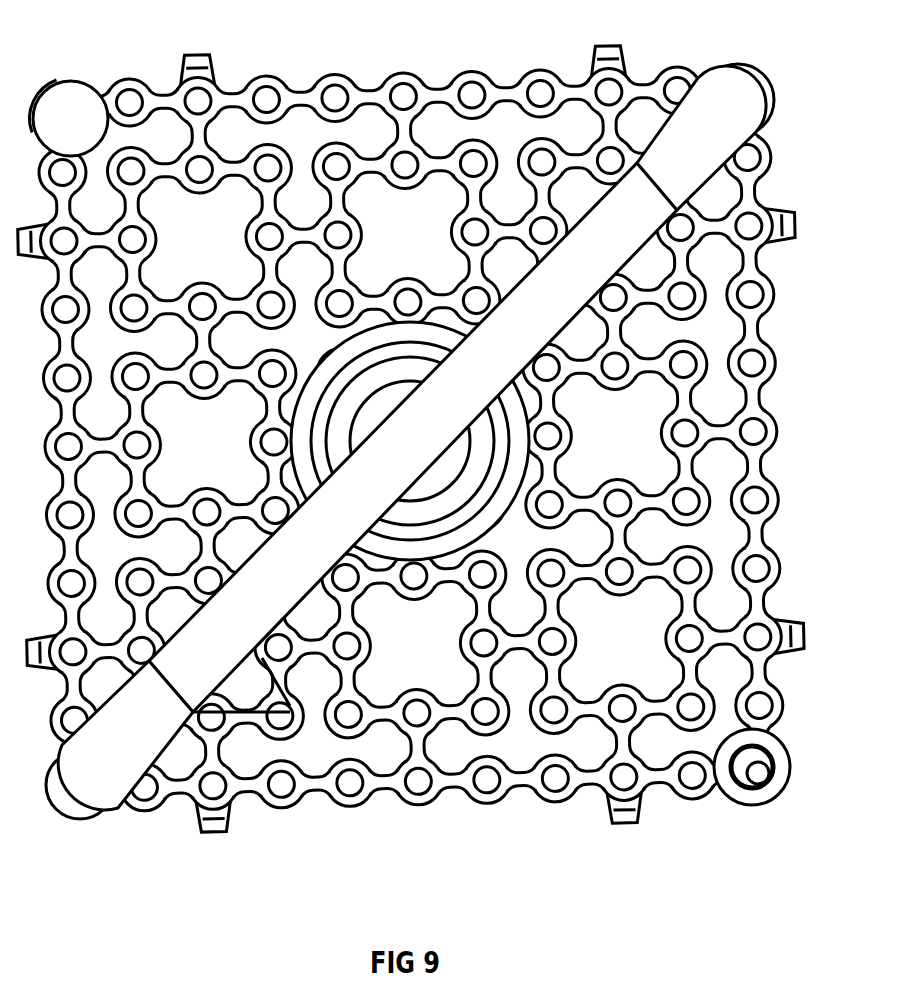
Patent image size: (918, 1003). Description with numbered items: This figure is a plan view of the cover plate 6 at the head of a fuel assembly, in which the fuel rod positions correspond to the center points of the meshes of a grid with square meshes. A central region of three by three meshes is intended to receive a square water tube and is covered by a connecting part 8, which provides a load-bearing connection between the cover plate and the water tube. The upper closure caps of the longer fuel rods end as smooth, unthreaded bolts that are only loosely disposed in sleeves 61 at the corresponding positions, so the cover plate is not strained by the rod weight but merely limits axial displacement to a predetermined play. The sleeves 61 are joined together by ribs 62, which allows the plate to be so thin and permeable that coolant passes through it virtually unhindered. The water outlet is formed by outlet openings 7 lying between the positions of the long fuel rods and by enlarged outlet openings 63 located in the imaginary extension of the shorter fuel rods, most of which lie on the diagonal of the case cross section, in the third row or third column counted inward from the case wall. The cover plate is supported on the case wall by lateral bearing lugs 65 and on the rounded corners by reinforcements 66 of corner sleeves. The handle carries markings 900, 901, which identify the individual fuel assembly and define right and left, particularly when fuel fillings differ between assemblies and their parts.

The cover plate 6 is at (417, 418).
The outlet openings 7 is at (568, 130).
The connecting part 8 is at (492, 515).
The sleeves 61 is at (332, 80).
The ribs 62 is at (362, 98).
The enlarged outlet openings 63 is at (411, 235).
The lateral bearing lugs 65 is at (192, 60).
The reinforcements of corner sleeves 66 is at (83, 103).
The marking 900 is at (325, 513).
The marking 901 is at (247, 695).